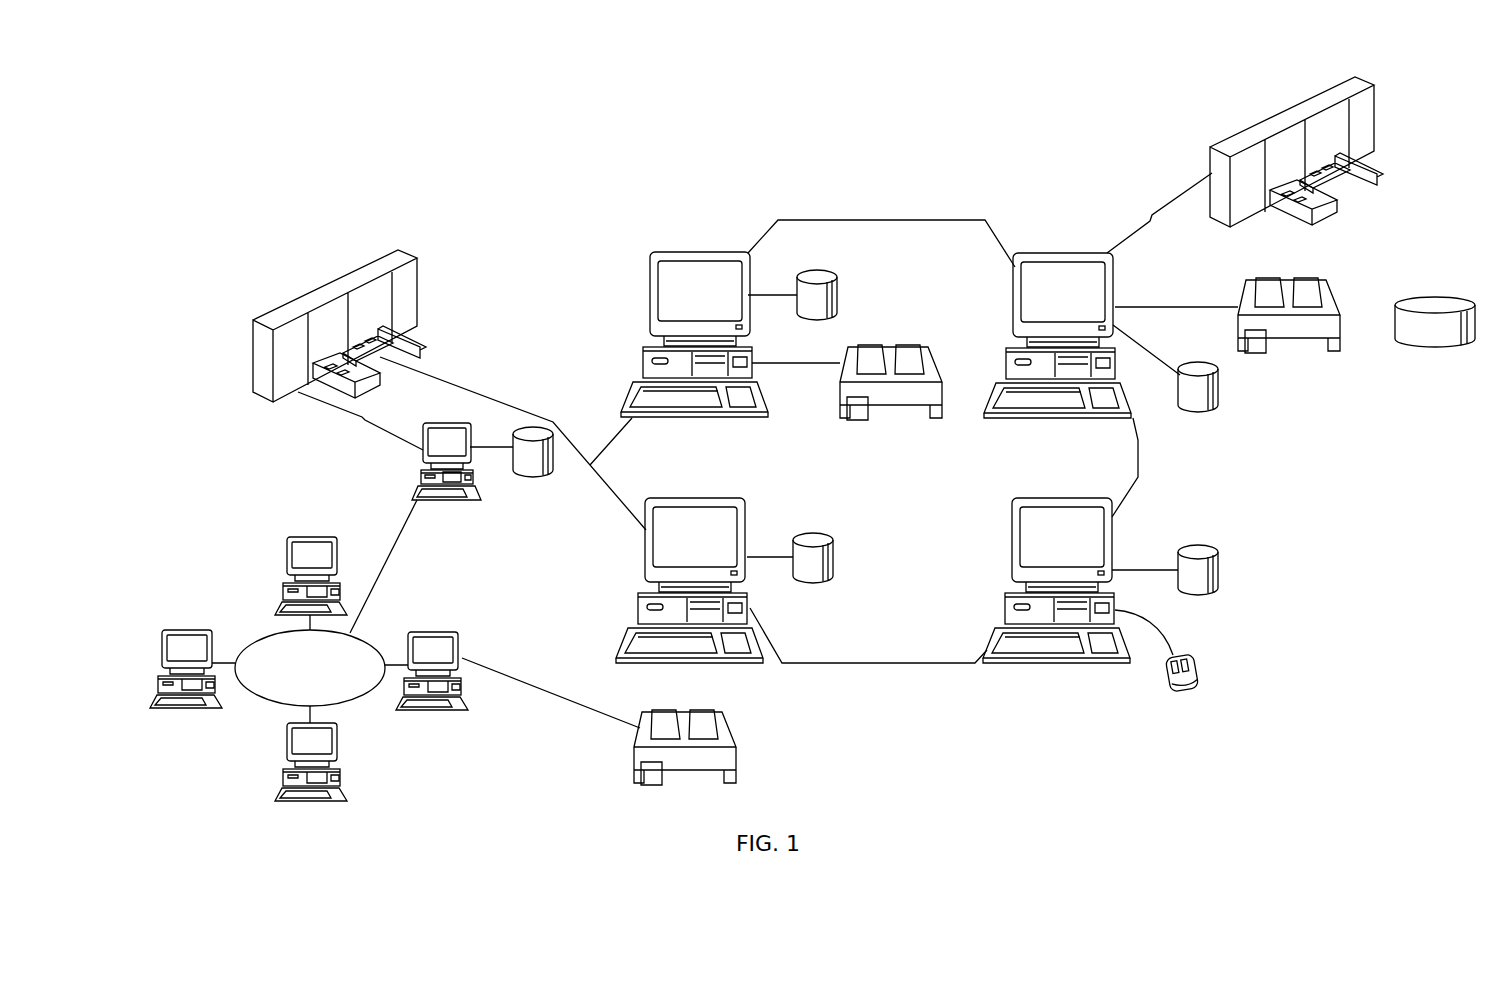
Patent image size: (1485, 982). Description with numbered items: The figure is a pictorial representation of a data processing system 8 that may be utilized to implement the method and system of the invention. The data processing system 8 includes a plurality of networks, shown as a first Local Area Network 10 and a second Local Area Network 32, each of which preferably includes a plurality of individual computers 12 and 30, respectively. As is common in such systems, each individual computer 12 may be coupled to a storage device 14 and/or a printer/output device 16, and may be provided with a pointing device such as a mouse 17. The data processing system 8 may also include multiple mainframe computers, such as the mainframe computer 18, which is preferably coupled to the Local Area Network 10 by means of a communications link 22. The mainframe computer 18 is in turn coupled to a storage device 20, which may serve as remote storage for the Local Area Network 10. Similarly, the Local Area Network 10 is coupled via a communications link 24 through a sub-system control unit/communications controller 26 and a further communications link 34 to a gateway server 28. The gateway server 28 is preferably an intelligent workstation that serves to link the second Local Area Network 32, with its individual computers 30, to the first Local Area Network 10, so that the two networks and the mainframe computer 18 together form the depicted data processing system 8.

The data processing system 8 is at (905, 200).
The Local Area Network 10 is at (888, 664).
The individual computer 12 is at (700, 252).
The storage device 14 is at (829, 271).
The printer/output device 16 is at (890, 345).
The mouse 17 is at (1198, 666).
The mainframe computer 18 is at (1294, 108).
The storage device 20 is at (1429, 300).
The communications link 22 is at (1188, 191).
The communications link 24 is at (466, 388).
The sub-system control unit/communications controller 26 is at (410, 258).
The gateway server 28 is at (442, 423).
The individual computer 30 is at (308, 537).
The Local Area Network 32 is at (267, 704).
The communications link 34 is at (320, 403).